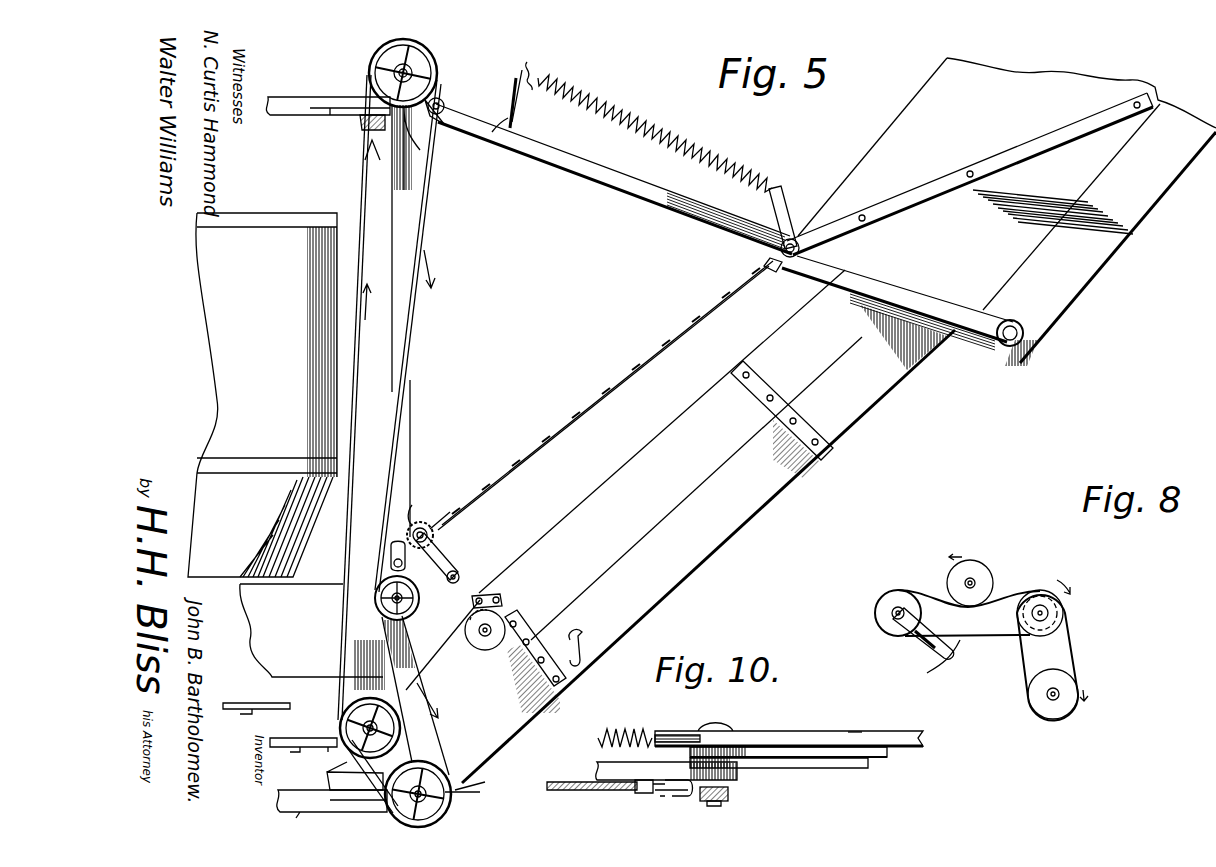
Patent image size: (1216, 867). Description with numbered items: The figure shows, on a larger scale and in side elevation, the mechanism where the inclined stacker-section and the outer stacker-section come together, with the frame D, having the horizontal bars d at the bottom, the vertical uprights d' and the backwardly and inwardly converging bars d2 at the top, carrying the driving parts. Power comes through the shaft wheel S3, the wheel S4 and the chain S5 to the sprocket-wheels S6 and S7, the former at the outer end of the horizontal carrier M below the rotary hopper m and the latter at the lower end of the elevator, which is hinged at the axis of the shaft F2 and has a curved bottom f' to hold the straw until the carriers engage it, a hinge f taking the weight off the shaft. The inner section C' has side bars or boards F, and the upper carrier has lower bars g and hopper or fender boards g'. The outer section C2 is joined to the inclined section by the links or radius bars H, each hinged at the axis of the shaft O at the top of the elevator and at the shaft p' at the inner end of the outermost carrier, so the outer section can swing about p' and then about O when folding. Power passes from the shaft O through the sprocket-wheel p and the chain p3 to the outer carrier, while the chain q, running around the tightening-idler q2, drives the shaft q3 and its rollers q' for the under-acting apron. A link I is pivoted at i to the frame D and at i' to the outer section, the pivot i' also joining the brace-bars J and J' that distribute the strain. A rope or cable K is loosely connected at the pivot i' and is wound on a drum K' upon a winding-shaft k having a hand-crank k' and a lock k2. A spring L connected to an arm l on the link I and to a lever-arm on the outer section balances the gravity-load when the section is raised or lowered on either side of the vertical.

In FIG. 5, the upper conveyor pulley S3 is at (388, 62).
In FIG. 5, the converging bars d2 is at (310, 98).
In FIG. 5, the wheel S4 is at (361, 120).
In FIG. 5, the chain S5 is at (367, 165).
In FIG. 5, the pivot i is at (443, 94).
In FIG. 5, the link I is at (617, 182).
In FIG. 10, the link I is at (598, 766).
In FIG. 5, the arm l is at (516, 85).
In FIG. 5, the rope or cable K is at (605, 302).
In FIG. 10, the rope or cable K is at (620, 801).
In FIG. 5, the pivot i' is at (765, 229).
In FIG. 10, the pivot i' is at (694, 761).
In FIG. 5, the panel C is at (941, 179).
In FIG. 5, the hopper or fender boards g' is at (1053, 159).
In FIG. 10, the hopper or fender boards g' is at (860, 713).
In FIG. 5, the outer stacker-section C2 is at (1110, 249).
In FIG. 10, the outer stacker-section C2 is at (789, 724).
In FIG. 5, the lower bars g is at (1071, 213).
In FIG. 5, the brace-bar J is at (970, 174).
In FIG. 10, the brace-bar J is at (788, 774).
In FIG. 5, the brace-bar J' is at (902, 313).
In FIG. 10, the brace-bar J' is at (779, 780).
In FIG. 5, the side bars or boards F is at (857, 408).
In FIG. 5, the inner stacker-section C' is at (634, 480).
In FIG. 5, the vertical uprights d' is at (393, 444).
In FIG. 5, the frame D is at (400, 484).
In FIG. 5, the drum K' is at (428, 524).
In FIG. 5, the lock k2 is at (415, 512).
In FIG. 5, the winding-shaft k is at (449, 532).
In FIG. 5, the hand-crank k' is at (452, 558).
In FIG. 5, the hinge f is at (519, 686).
In FIG. 5, the sprocket-wheel S6 is at (350, 716).
In FIG. 5, the sprocket-wheel S7 is at (449, 813).
In FIG. 5, the shaft F2 is at (463, 795).
In FIG. 5, the horizontal carrier M is at (246, 712).
In FIG. 5, the curved bottom f' is at (326, 764).
In FIG. 5, the horizontal bars d is at (332, 812).
In FIG. 5, the rotary hopper m is at (286, 451).
In FIG. 8, the rollers q' is at (988, 563).
In FIG. 8, the shaft q3 is at (976, 582).
In FIG. 8, the tightening-idler q2 is at (883, 610).
In FIG. 8, the chain q is at (926, 651).
In FIG. 8, the shaft O is at (969, 624).
In FIG. 8, the chain p3 is at (1073, 636).
In FIG. 8, the link or radius bar H is at (1027, 652).
In FIG. 8, the shaft p' is at (1082, 695).
In FIG. 8, the sprocket-wheel p is at (1053, 712).
In FIG. 10, the spring L is at (625, 720).